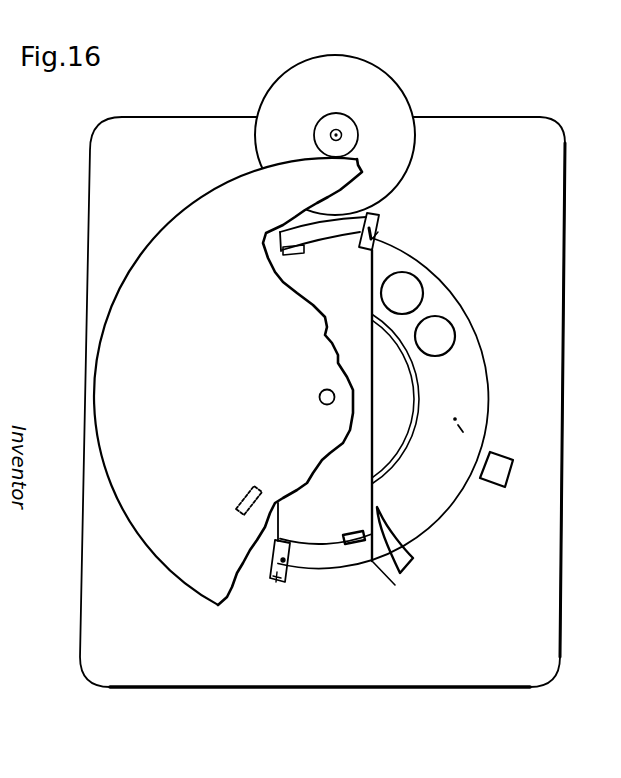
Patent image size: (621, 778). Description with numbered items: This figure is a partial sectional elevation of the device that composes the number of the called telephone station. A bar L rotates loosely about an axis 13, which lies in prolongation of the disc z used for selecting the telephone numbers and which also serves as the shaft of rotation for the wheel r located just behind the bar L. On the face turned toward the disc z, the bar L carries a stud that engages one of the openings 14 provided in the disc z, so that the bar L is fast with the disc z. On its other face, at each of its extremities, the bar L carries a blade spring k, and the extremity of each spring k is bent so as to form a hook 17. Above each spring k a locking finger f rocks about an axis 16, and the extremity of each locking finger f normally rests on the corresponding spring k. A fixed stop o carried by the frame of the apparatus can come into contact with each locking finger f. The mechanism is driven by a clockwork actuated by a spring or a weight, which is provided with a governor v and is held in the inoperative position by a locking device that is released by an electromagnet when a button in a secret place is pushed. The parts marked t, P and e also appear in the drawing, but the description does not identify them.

The housing t is at (137, 179).
The governor v is at (321, 128).
The wheel r is at (175, 290).
The axis 13 is at (319, 397).
The disc for the selection of the telephone-numbers z is at (383, 411).
The hook 17 is at (370, 263).
The locking finger f is at (379, 223).
The axis 16 is at (378, 241).
The openings 14 is at (409, 290).
The cam plate P is at (355, 375).
The bar L is at (350, 491).
The fixed stop o is at (498, 472).
The detent e is at (247, 498).
The blade spring k is at (328, 545).